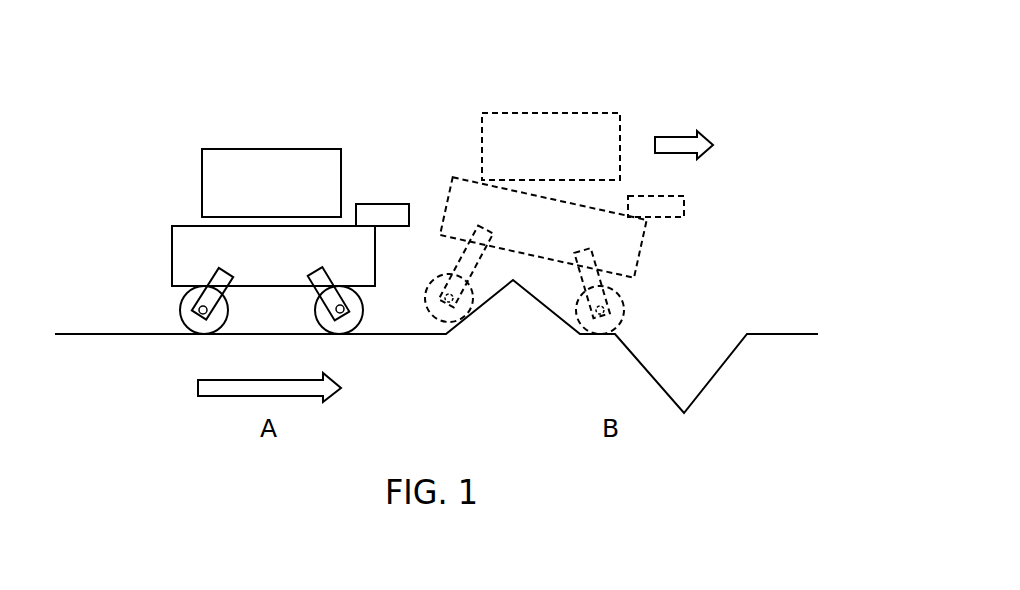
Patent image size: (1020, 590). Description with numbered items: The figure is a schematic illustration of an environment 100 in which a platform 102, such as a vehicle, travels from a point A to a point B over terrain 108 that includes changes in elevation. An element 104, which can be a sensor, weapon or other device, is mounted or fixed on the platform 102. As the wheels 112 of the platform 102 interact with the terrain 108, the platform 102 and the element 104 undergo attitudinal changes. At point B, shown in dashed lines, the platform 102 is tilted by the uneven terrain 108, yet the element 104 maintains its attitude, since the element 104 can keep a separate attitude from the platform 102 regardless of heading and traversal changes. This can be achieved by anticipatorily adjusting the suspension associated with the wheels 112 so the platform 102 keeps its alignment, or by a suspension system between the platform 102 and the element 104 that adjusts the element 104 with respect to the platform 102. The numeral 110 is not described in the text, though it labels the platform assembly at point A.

The environment 100 is at (662, 28).
The mobile robot 110 is at (198, 119).
The platform 102 is at (180, 254).
The element 104 is at (203, 162).
The terrain 108 is at (759, 334).
The wheels 112 is at (181, 312).